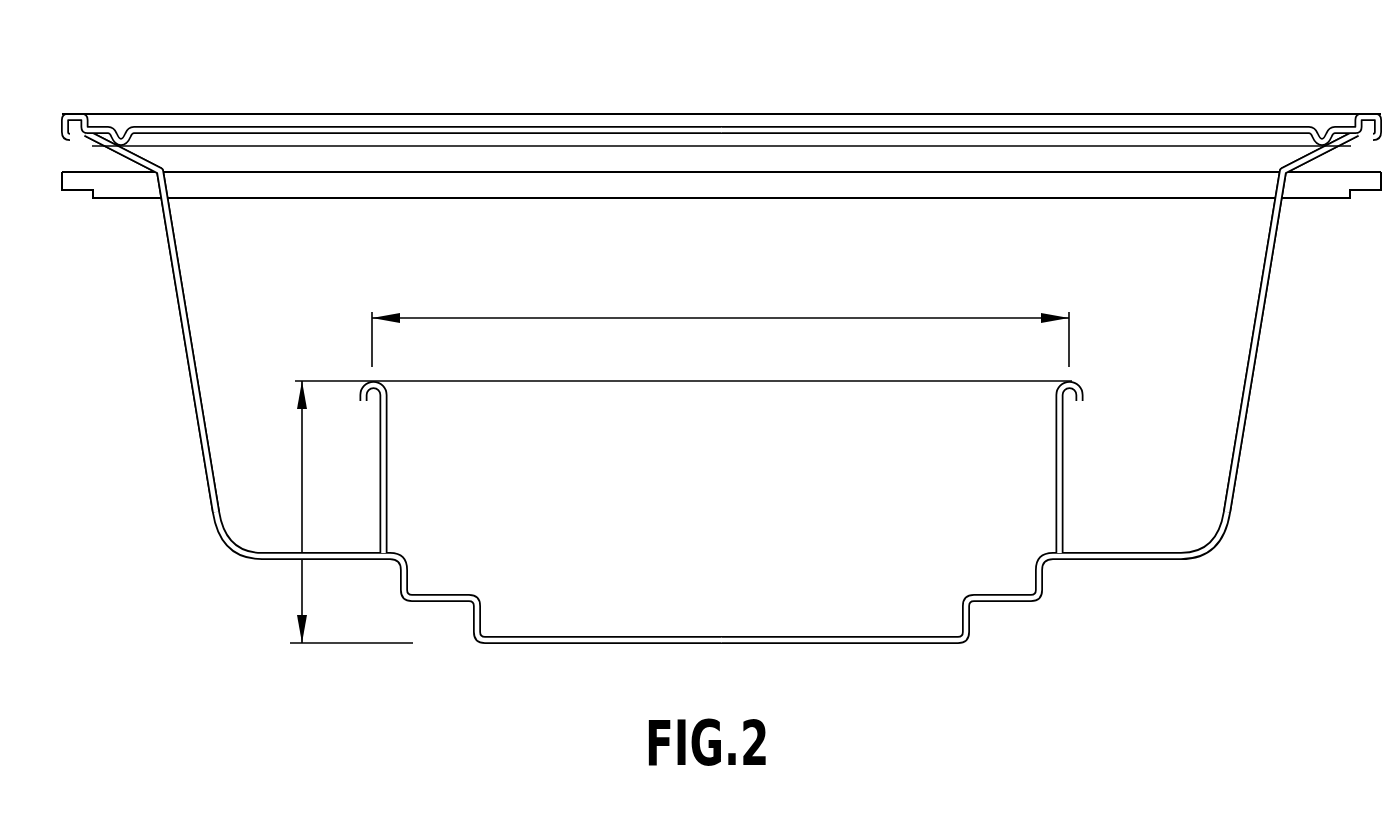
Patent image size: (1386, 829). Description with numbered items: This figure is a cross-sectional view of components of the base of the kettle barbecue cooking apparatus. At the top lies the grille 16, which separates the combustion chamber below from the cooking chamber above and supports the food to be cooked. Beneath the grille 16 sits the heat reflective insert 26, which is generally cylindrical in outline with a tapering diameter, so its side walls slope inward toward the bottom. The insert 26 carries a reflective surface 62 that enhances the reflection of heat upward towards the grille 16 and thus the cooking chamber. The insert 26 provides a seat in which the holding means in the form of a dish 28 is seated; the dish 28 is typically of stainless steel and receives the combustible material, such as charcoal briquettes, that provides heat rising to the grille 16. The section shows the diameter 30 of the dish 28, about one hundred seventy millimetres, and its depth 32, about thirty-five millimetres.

The grille 16 is at (718, 123).
The heat reflective insert 26 is at (721, 386).
The reflective surface 62 is at (182, 273).
The dish 28 is at (449, 562).
The diameter 30 is at (670, 317).
The depth 32 is at (302, 480).